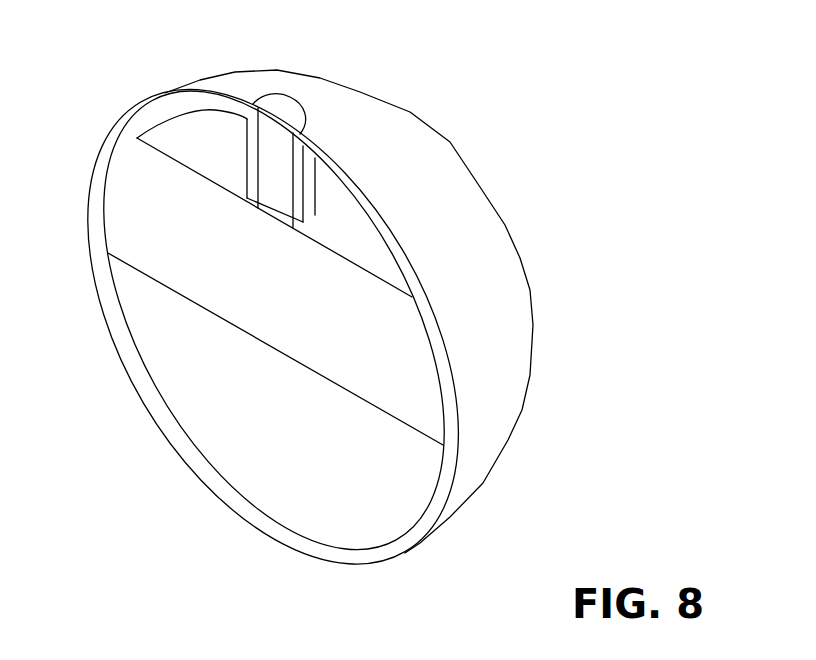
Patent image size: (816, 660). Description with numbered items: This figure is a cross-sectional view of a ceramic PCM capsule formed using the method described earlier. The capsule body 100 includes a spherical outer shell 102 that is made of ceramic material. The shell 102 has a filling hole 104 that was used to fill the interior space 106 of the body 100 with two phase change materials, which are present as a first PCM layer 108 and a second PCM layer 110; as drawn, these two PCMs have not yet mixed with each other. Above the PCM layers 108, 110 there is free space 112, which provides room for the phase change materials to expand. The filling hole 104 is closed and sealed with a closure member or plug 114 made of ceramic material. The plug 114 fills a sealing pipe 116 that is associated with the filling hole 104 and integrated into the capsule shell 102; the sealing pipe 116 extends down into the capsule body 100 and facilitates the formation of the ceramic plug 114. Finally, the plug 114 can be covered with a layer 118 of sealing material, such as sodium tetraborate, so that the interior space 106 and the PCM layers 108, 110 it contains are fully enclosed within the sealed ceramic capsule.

The capsule body 100 is at (573, 181).
The spherical outer shell 102 is at (500, 437).
The filling hole 104 is at (276, 240).
The interior space 106 is at (190, 468).
The first PCM layer 108 is at (150, 373).
The second PCM layer 110 is at (120, 222).
The free space 112 is at (177, 135).
The plug 114 is at (267, 177).
The sealing pipe 116 is at (308, 213).
The layer of sealing material 118 is at (268, 208).